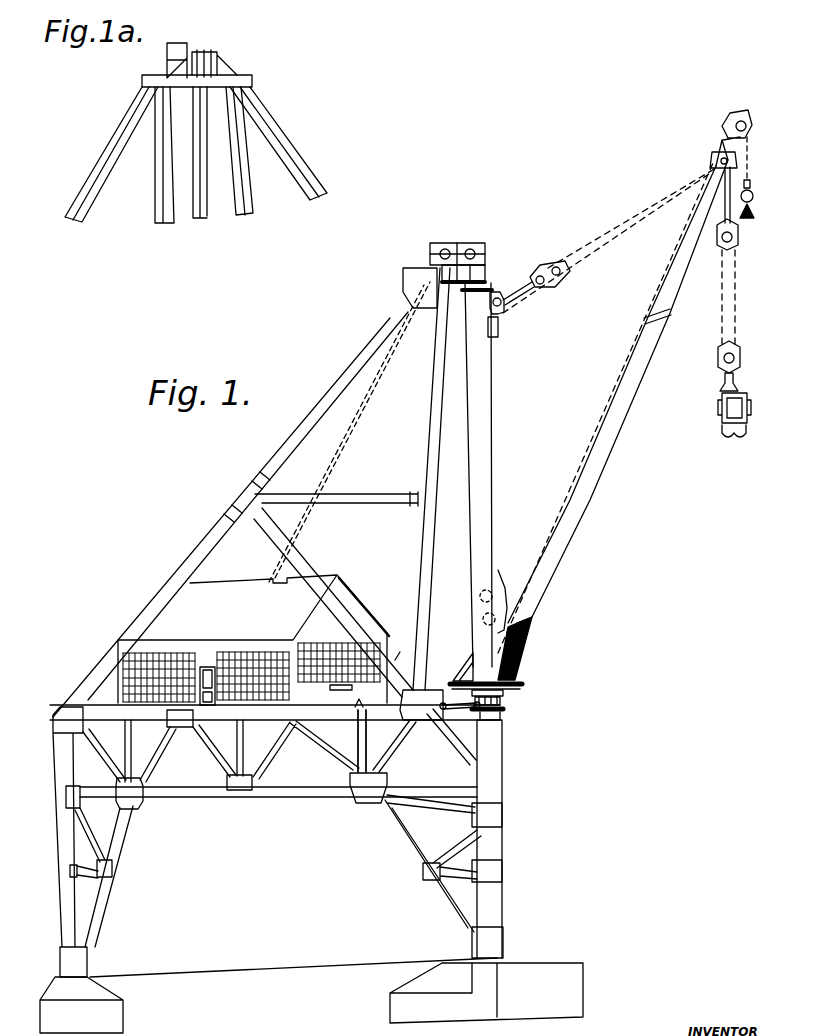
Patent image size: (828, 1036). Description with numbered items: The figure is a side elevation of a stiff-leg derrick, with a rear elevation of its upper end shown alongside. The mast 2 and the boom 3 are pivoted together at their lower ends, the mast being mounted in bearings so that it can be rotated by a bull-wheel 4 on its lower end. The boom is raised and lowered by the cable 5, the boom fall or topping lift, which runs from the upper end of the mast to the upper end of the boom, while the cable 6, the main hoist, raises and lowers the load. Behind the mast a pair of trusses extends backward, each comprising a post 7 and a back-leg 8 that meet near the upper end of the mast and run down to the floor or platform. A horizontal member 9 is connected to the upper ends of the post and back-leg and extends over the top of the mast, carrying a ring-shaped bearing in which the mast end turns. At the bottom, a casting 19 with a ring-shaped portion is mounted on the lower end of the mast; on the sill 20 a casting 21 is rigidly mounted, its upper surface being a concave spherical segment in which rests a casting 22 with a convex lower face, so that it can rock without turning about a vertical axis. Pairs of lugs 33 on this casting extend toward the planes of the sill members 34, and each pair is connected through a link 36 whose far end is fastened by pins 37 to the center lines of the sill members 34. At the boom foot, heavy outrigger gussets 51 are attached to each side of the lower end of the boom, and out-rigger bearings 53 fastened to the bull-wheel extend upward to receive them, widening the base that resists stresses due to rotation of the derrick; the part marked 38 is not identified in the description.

In FIG. 1A, the mast 2 is at (208, 210).
In FIG. 1, the mast 2 is at (492, 457).
In FIG. 1, the boom 3 is at (610, 460).
In FIG. 1, the bull-wheel 4 is at (522, 686).
In FIG. 1, the cable 5 is at (576, 276).
In FIG. 1, the cable 6 is at (608, 373).
In FIG. 1A, the post 7 is at (155, 174).
In FIG. 1, the post 7 is at (425, 447).
In FIG. 1A, the back-leg 8 is at (117, 135).
In FIG. 1, the back-leg 8 is at (293, 442).
In FIG. 1A, the horizontal member 9 is at (244, 75).
In FIG. 1, the horizontal member 9 is at (455, 285).
In FIG. 1, the casting 19 is at (503, 693).
In FIG. 1, the sill 20 is at (503, 740).
In FIG. 1, the casting 21 is at (503, 712).
In FIG. 1, the casting 22 is at (500, 701).
In FIG. 1, the lugs 33 is at (460, 715).
In FIG. 1, the sill members 34 is at (390, 710).
In FIG. 1, the link 36 is at (440, 700).
In FIG. 1, the pins 37 is at (435, 725).
In FIG. 1, the brace end 38 is at (397, 650).
In FIG. 1, the outrigger gussets 51 is at (522, 660).
In FIG. 1, the out-rigger bearings 53 is at (463, 667).